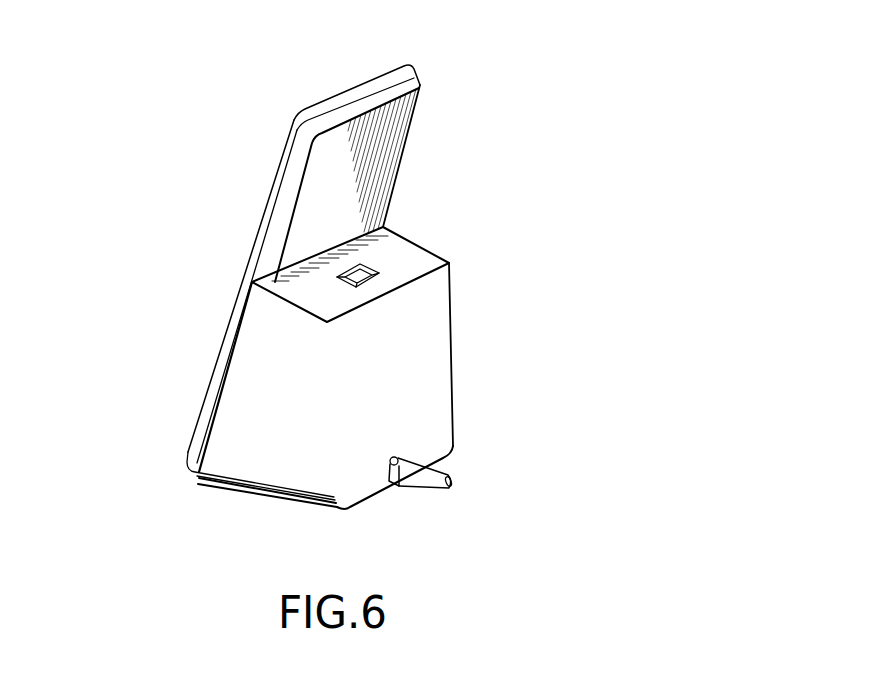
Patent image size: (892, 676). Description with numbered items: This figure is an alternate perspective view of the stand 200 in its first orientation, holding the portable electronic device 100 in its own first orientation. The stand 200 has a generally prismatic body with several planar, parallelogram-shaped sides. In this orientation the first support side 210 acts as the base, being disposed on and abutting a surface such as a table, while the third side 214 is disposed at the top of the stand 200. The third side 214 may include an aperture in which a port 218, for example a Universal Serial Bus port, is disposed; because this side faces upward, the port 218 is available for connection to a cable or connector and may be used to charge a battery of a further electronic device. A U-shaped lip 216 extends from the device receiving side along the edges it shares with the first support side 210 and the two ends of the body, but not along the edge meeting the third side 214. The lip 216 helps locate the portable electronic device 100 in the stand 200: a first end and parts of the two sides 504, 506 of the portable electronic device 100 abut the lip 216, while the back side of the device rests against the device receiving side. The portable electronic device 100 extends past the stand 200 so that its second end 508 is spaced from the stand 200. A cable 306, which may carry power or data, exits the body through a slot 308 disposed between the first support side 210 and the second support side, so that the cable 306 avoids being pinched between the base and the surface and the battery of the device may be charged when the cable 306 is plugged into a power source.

The portable electronic device 100 is at (347, 259).
The side of the portable electronic device 504 is at (260, 242).
The side of the portable electronic device 506 is at (405, 148).
The second end 508 is at (332, 108).
The stand 200 is at (333, 394).
The third side 214 is at (394, 263).
The port 218 is at (370, 283).
The lip 216 is at (215, 407).
The first support side 210 is at (295, 502).
The cable 306 is at (481, 514).
The slot 308 is at (389, 478).